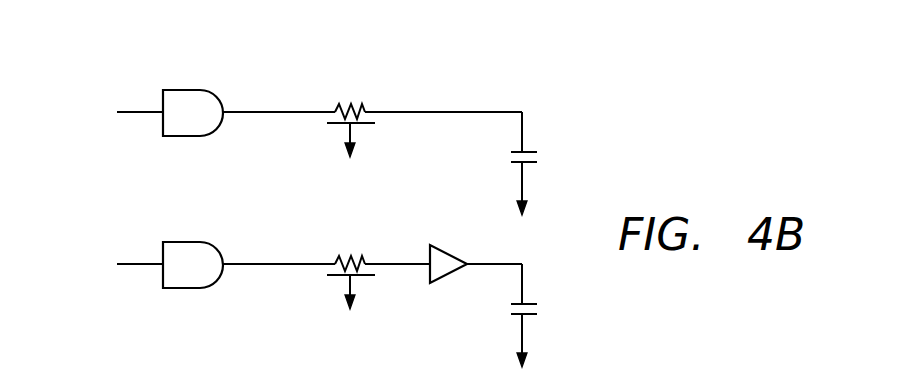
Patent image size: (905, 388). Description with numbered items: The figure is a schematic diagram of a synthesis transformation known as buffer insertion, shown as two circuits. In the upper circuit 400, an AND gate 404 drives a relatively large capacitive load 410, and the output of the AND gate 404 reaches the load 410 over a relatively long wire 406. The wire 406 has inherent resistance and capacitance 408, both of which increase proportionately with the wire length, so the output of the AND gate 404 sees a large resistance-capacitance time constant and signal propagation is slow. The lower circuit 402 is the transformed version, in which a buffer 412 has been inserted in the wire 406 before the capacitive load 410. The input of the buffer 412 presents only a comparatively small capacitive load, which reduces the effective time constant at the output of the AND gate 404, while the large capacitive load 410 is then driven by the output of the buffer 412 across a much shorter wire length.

The circuit 400 is at (80, 103).
The circuit 402 is at (80, 255).
The AND gate 404 is at (187, 89).
The wire 406 is at (278, 110).
The resistance and capacitance 408 is at (352, 105).
The capacitive load 410 is at (540, 155).
The buffer 412 is at (448, 245).